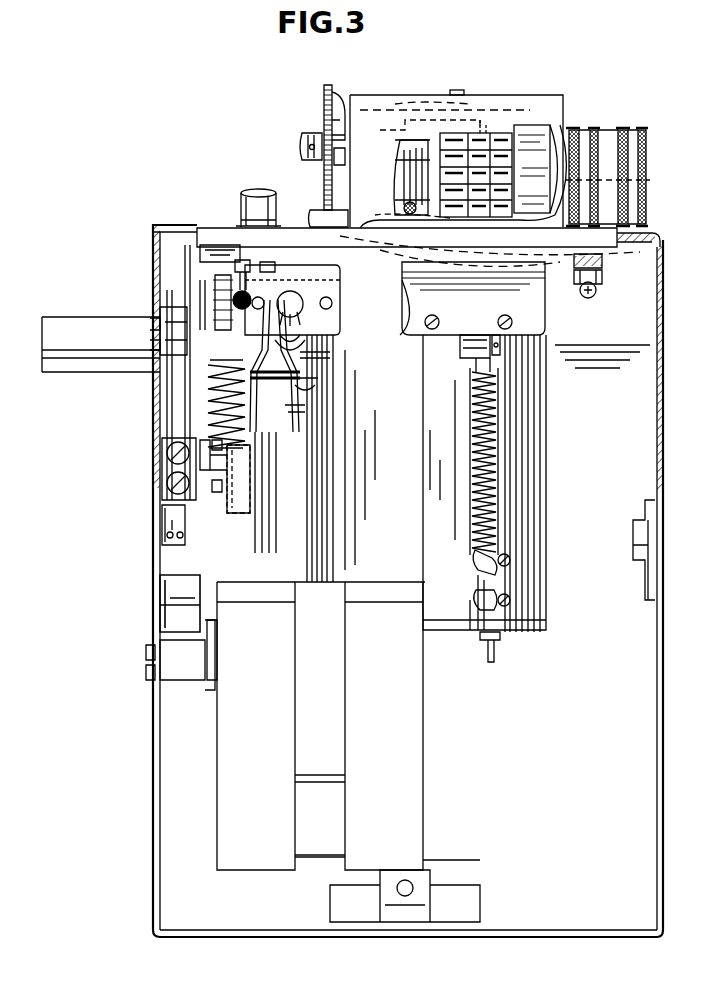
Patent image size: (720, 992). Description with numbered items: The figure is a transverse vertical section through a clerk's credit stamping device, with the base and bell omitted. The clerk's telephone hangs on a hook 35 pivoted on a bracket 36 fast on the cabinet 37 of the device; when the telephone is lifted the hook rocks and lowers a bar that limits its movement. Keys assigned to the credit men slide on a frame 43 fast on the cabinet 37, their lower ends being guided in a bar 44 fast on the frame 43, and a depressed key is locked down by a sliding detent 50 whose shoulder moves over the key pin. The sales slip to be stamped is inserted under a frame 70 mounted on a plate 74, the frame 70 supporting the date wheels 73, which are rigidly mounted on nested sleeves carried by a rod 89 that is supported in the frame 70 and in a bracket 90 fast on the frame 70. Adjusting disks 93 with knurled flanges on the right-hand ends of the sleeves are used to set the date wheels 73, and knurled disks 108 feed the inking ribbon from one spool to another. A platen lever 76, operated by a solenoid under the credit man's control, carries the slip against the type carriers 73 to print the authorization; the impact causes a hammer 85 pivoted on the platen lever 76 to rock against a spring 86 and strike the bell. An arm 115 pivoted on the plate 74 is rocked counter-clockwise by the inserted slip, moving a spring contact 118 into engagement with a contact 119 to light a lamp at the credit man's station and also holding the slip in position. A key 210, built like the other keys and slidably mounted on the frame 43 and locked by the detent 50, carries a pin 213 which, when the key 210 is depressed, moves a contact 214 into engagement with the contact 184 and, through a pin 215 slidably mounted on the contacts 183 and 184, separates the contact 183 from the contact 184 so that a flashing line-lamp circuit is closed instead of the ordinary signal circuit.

The hook 35 is at (73, 368).
The bracket 36 is at (282, 285).
The cabinet 37 is at (661, 436).
The frame 43 is at (205, 387).
The bar 44 is at (240, 513).
The detent 50 is at (218, 302).
The frame 70 is at (374, 105).
The date wheels 73 is at (486, 132).
The plate 74 is at (630, 240).
The platen lever 76 is at (533, 318).
The hammer 85 is at (476, 374).
The spring 86 is at (470, 518).
The rod 89 is at (532, 172).
The bracket 90 is at (428, 135).
The adjusting disks 93 is at (612, 132).
The knurled disks 108 is at (324, 98).
The arm 115 is at (575, 292).
The spring contact 118 is at (603, 280).
The contact 119 is at (603, 262).
The contact 183 is at (290, 413).
The contact 184 is at (302, 392).
The key 210 is at (252, 200).
The pin 213 is at (234, 296).
The contact 214 is at (268, 420).
The pin 215 is at (318, 357).